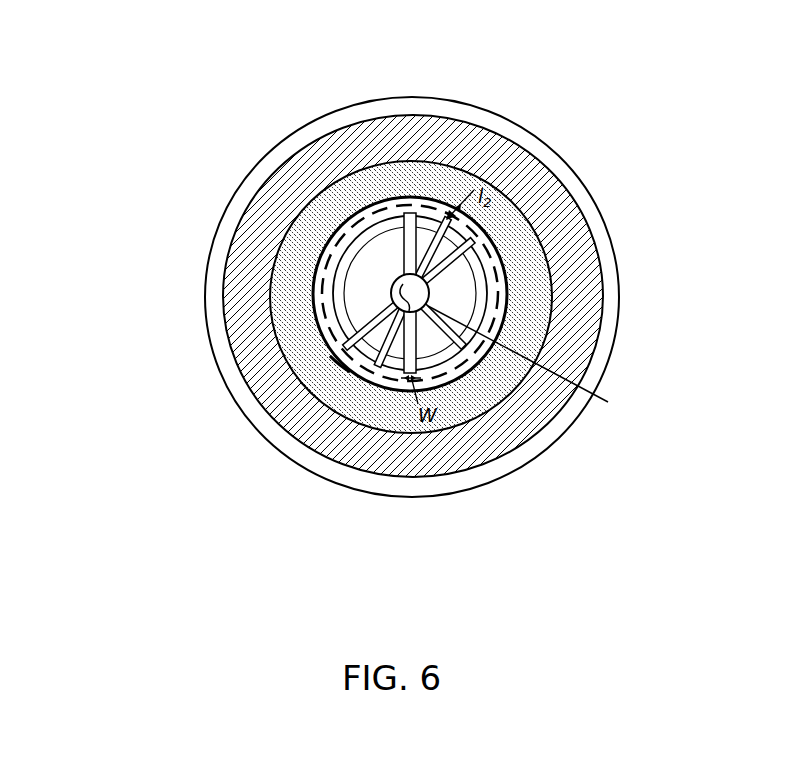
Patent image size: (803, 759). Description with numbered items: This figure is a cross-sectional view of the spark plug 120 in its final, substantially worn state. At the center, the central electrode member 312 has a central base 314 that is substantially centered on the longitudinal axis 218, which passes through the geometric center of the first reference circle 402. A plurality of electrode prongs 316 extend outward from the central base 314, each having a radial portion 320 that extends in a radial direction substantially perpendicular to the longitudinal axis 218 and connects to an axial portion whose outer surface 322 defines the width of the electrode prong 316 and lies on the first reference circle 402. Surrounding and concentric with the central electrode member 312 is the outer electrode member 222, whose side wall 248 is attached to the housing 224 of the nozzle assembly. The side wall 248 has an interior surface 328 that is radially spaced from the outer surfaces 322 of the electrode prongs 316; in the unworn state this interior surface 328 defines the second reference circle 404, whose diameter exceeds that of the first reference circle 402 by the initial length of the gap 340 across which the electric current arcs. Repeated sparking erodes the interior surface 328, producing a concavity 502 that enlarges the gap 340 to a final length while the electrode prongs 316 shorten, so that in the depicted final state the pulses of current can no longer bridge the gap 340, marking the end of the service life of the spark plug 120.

The spark plug 120 is at (137, 81).
The housing 224 is at (288, 193).
The outer electrode member 222 is at (380, 173).
The side wall 248 is at (313, 249).
The gap 340 is at (428, 196).
The interior surface 328 is at (507, 256).
The first reference circle 402 is at (500, 300).
The second reference circle 404 is at (483, 228).
The concavity 502 is at (338, 358).
The central electrode member 312 is at (466, 350).
The central base 314 is at (540, 365).
The electrode prong 316 is at (378, 364).
The radial portion 320 is at (340, 343).
The outer surface 322 is at (322, 342).
The longitudinal axis 218 is at (398, 289).